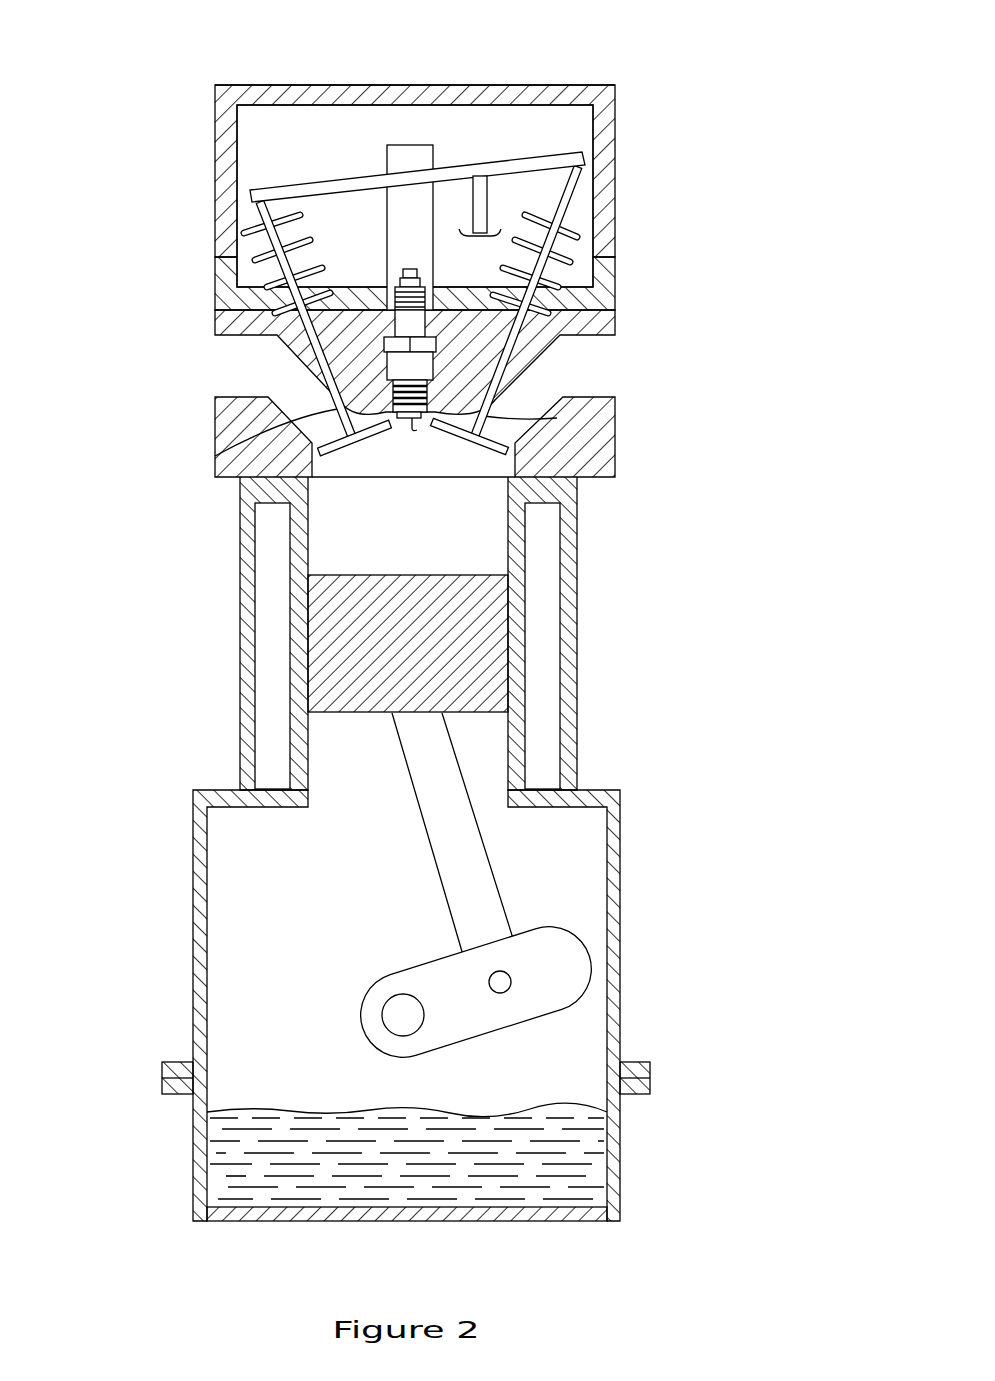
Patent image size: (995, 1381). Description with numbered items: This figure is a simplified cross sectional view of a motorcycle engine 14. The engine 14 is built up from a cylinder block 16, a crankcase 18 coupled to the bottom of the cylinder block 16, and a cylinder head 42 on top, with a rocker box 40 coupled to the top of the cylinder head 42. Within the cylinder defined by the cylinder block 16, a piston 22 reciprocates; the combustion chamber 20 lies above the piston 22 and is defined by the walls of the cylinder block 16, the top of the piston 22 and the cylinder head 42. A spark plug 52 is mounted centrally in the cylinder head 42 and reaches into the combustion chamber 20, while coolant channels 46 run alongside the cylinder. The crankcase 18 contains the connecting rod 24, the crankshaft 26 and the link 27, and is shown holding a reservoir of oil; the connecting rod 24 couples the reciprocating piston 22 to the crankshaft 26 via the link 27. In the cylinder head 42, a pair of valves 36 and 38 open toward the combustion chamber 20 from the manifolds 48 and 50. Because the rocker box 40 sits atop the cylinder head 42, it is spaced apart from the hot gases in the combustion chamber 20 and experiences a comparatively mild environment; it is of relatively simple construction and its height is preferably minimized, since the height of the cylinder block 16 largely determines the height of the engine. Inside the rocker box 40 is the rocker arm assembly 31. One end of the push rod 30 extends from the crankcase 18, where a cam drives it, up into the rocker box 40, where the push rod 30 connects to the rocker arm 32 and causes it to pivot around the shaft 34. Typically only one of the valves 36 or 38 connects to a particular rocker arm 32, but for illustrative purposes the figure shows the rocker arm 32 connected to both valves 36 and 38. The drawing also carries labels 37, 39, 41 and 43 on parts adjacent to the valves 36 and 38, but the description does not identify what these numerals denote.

The engine 14 is at (218, 76).
The cylinder block 16 is at (586, 646).
The crankcase 18 is at (620, 996).
The combustion chamber 20 is at (483, 542).
The piston 22 is at (308, 725).
The connecting rod 24 is at (458, 835).
The crankshaft 26 is at (398, 1017).
The link 27 is at (586, 944).
The push rod 30 is at (487, 190).
The rocker arm assembly 31 is at (547, 126).
The rocker arm 32 is at (305, 185).
The shaft 34 is at (410, 176).
The valve 36 is at (557, 418).
The exhaust valve stem 37 is at (583, 172).
The valve 38 is at (228, 453).
The intake valve stem 39 is at (262, 207).
The rocker box 40 is at (182, 135).
The exhaust valve spring 41 is at (583, 233).
The cylinder head 42 is at (213, 412).
The intake valve spring 43 is at (235, 273).
The coolant channel 46 is at (277, 662).
The manifold 48 is at (615, 357).
The manifold 50 is at (228, 343).
The spark plug 52 is at (417, 368).